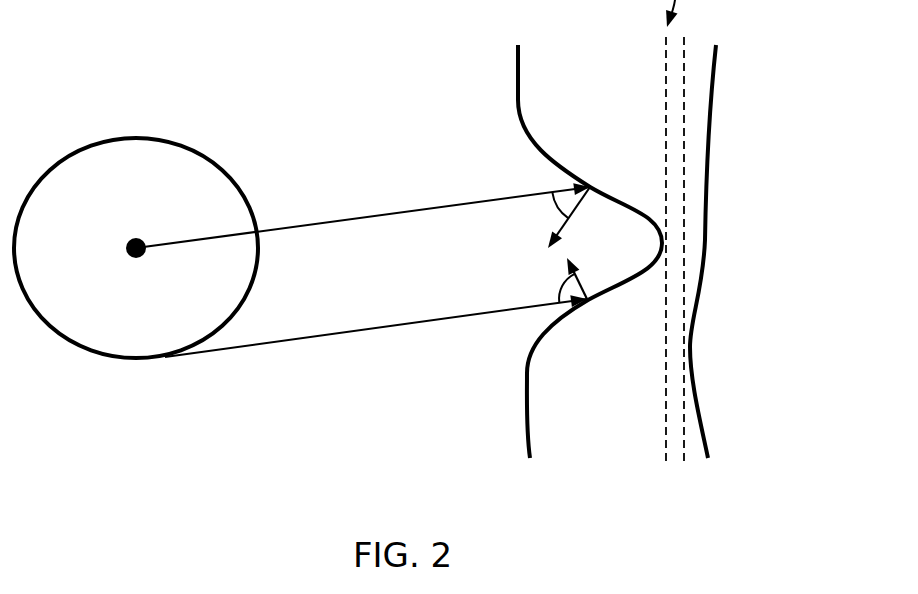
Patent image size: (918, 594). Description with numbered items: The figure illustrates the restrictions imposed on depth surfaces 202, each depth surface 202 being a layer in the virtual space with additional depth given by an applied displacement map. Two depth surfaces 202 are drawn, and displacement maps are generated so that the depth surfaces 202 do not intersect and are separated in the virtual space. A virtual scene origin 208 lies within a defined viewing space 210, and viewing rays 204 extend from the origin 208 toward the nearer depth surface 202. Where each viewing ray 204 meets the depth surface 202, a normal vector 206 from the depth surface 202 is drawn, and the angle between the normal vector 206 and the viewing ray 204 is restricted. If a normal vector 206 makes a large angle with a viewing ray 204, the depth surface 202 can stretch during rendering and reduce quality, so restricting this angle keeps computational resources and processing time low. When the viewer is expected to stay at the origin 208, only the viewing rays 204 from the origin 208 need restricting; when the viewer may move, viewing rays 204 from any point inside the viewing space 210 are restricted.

The depth surface 202 is at (518, 77).
The viewing ray 204 is at (350, 222).
The normal vector 206 is at (558, 232).
The virtual scene origin 208 is at (137, 240).
The viewing space 210 is at (142, 138).